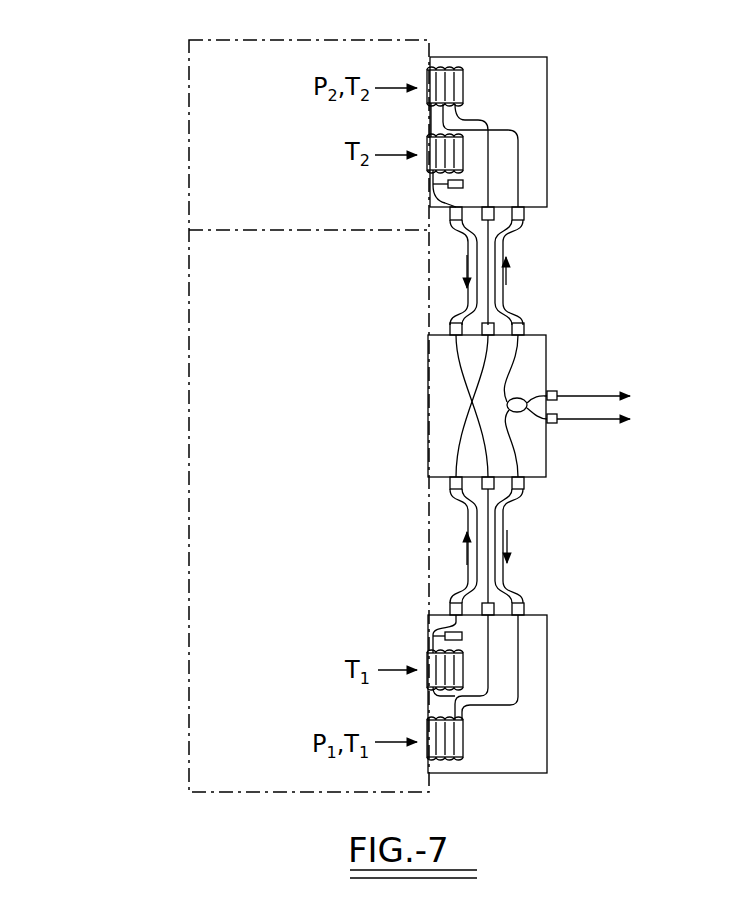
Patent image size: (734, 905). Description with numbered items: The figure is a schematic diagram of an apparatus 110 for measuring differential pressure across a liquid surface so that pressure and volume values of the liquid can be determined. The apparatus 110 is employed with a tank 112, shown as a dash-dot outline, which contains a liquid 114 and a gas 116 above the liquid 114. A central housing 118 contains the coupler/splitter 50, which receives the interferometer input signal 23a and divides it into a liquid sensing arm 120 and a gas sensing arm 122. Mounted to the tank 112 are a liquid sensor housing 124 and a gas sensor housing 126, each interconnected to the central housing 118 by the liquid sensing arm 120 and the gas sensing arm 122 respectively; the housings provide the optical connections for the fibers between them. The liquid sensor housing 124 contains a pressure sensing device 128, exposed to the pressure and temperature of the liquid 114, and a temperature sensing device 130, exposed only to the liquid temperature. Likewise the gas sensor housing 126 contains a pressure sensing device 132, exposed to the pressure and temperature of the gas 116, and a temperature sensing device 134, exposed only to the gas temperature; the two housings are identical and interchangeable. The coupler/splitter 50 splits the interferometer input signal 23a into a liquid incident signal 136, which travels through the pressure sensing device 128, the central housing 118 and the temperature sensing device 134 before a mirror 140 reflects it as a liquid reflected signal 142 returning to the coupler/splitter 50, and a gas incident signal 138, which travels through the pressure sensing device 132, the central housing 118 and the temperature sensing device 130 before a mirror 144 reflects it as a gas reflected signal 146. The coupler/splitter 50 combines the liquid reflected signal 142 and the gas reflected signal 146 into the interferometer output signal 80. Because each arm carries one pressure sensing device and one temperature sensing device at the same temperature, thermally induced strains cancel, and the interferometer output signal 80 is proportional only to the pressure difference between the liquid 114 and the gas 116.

The apparatus 110 is at (578, 100).
The tank 112 is at (186, 122).
The liquid 114 is at (291, 571).
The gas 116 is at (294, 156).
The central housing 118 is at (546, 470).
The liquid sensing arm 120 is at (527, 573).
The gas sensing arm 122 is at (527, 282).
The liquid sensor housing 124 is at (547, 692).
The gas sensor housing 126 is at (547, 172).
The pressure sensing device 128 is at (430, 757).
The temperature sensing device 130 is at (430, 686).
The pressure sensing device 132 is at (430, 70).
The temperature sensing device 134 is at (430, 170).
The liquid incident signal 136 is at (507, 545).
The gas incident signal 138 is at (515, 275).
The mirror 140 is at (452, 188).
The liquid reflected signal 142 is at (465, 270).
The mirror 144 is at (433, 636).
The gas reflected signal 146 is at (467, 550).
The coupler/splitter 50 is at (522, 398).
The interferometer input signal 23a is at (612, 386).
The interferometer output signal 80 is at (612, 425).